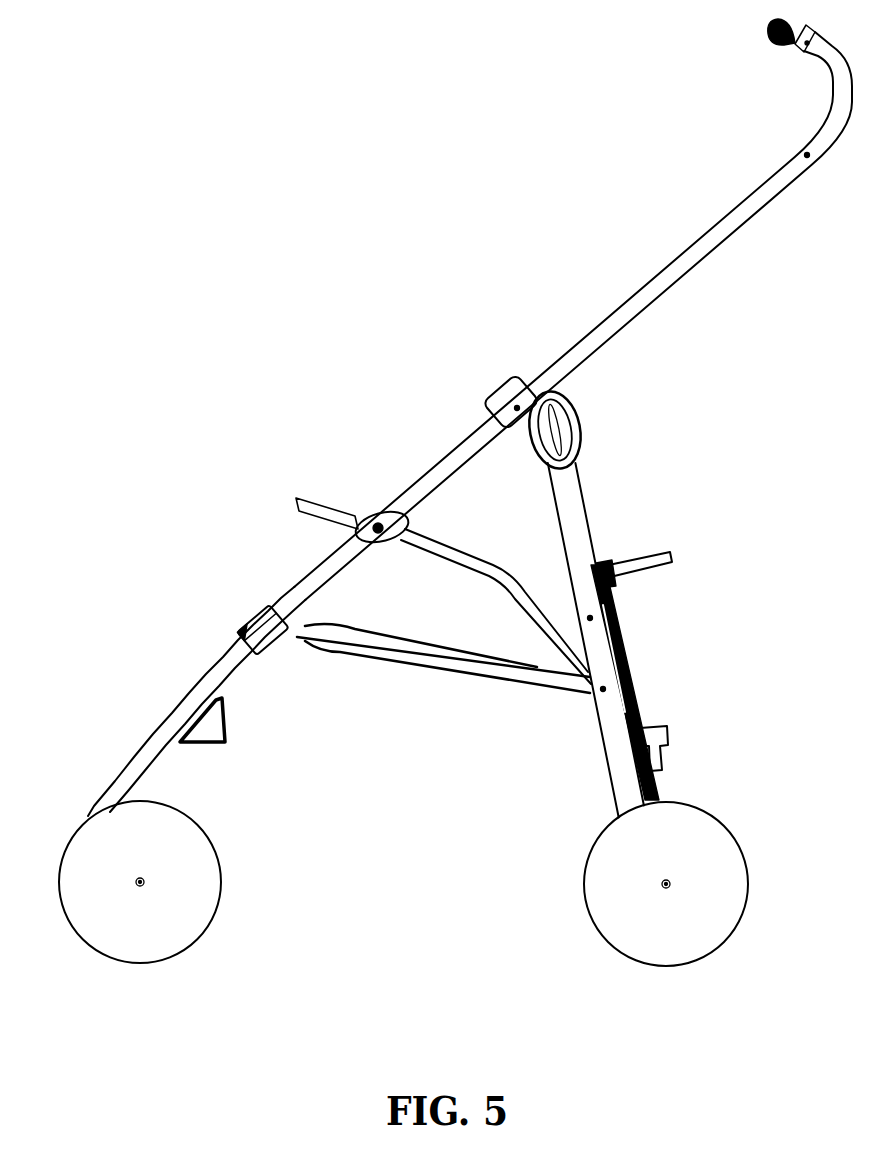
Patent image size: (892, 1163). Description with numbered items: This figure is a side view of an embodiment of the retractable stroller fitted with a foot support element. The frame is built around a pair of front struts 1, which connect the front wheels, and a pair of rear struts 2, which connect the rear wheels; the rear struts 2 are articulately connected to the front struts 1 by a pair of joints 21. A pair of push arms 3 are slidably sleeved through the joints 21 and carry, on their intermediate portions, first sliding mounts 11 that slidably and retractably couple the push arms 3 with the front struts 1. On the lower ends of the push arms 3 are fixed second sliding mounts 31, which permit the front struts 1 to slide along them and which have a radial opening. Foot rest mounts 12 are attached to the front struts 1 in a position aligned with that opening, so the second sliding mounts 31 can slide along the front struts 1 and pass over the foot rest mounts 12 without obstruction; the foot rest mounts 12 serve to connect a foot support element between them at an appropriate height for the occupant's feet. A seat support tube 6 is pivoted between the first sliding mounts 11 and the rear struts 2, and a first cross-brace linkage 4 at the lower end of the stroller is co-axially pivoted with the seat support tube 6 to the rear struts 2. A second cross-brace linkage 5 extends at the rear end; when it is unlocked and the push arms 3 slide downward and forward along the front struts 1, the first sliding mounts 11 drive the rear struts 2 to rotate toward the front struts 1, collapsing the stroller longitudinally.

The front strut 1 is at (102, 795).
The rear strut 2 is at (576, 513).
The push arm 3 is at (701, 243).
The first cross-brace linkage 4 is at (430, 638).
The second cross-brace linkage 5 is at (655, 677).
The seat support tube 6 is at (500, 567).
The first sliding mount 11 is at (378, 517).
The foot rest mount 12 is at (224, 731).
The joint 21 is at (581, 426).
The second sliding mount 31 is at (250, 618).